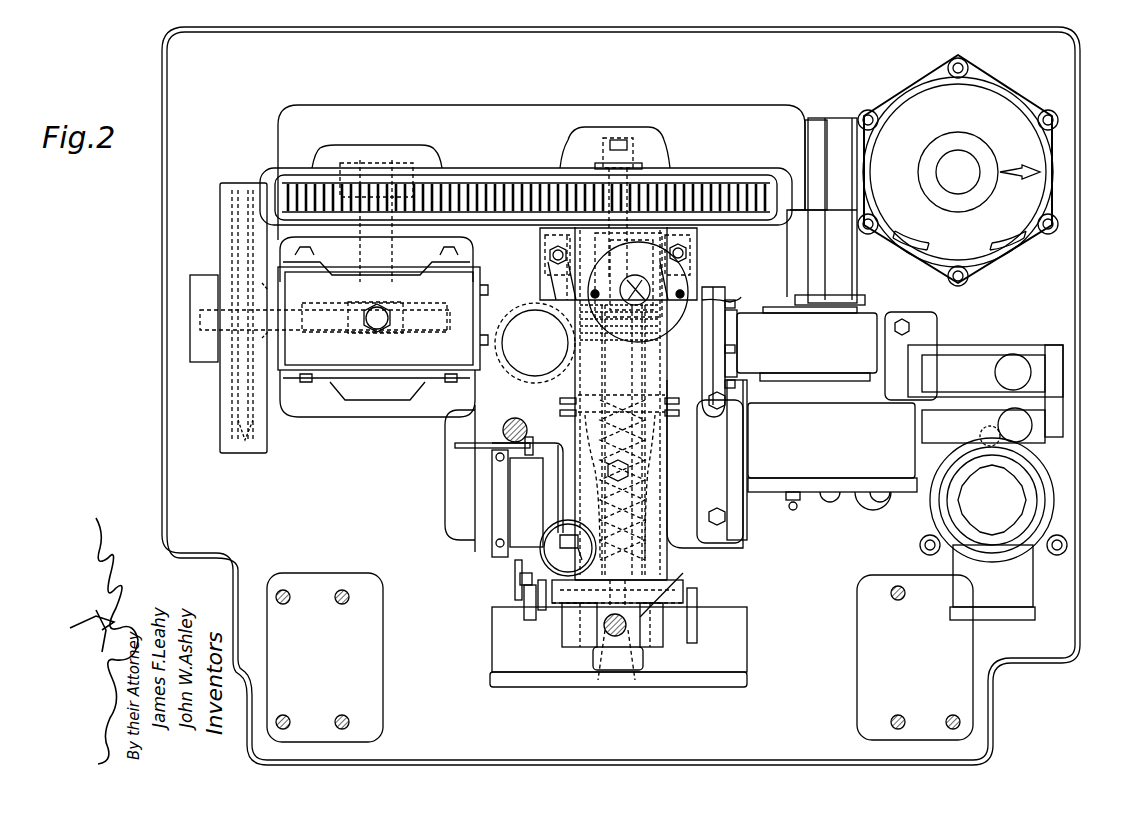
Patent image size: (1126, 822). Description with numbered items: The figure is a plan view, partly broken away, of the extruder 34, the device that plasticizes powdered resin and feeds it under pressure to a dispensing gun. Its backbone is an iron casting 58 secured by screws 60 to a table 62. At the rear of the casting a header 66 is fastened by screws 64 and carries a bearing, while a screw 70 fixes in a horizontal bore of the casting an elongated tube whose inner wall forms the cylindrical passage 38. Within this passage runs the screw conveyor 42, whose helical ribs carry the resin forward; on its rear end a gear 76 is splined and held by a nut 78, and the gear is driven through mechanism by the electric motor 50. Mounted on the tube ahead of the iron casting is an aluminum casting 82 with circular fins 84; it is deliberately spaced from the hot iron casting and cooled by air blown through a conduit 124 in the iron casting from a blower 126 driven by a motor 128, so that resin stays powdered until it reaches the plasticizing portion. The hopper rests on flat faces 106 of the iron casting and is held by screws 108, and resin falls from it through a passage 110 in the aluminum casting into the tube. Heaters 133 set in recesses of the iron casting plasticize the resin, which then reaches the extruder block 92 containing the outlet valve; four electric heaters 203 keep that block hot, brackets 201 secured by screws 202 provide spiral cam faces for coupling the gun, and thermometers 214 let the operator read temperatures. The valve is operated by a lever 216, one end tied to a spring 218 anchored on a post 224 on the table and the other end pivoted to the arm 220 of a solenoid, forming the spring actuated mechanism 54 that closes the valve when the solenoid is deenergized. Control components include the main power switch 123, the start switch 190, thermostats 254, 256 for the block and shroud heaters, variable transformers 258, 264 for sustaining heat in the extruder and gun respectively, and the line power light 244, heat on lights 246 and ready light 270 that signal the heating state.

The extruder 34 is at (693, 481).
The passage 38 is at (655, 452).
The screw conveyor 42 is at (652, 428).
The electric motor 50 is at (468, 300).
The spring actuated mechanism 54 is at (460, 507).
The iron casting 58 is at (672, 553).
The screws 60 is at (548, 256).
The table 62 is at (512, 106).
The screws 64 is at (688, 244).
The header 66 is at (567, 232).
The screw 70 is at (590, 430).
The gear 76 is at (683, 190).
The nut 78 is at (628, 140).
The aluminum casting 82 is at (660, 280).
The circular fins 84 is at (665, 345).
The extruder block 92 is at (640, 665).
The flat faces 106 is at (727, 302).
The screws 108 is at (592, 292).
The passage 110 is at (698, 296).
The main or power switch 123 is at (793, 510).
The conduit 124 is at (512, 340).
The blower 126 is at (872, 316).
The motor 128 is at (858, 280).
The heaters 133 is at (582, 412).
The start switch 190 is at (795, 491).
The brackets 201 is at (680, 591).
The screws 202 is at (617, 635).
The electric heaters 203 is at (582, 640).
The thermometers 214 is at (540, 536).
The lever 216 is at (516, 576).
The spring 218 is at (520, 462).
The arm 220 is at (523, 598).
The post 224 is at (514, 432).
The line power light 244 is at (868, 500).
The heat on lights 246 is at (832, 500).
The thermostat 254 is at (1032, 372).
The thermostat 256 is at (1033, 425).
The variable transformer 258 is at (978, 140).
The variable transformer 264 is at (1020, 492).
The ready light 270 is at (887, 500).